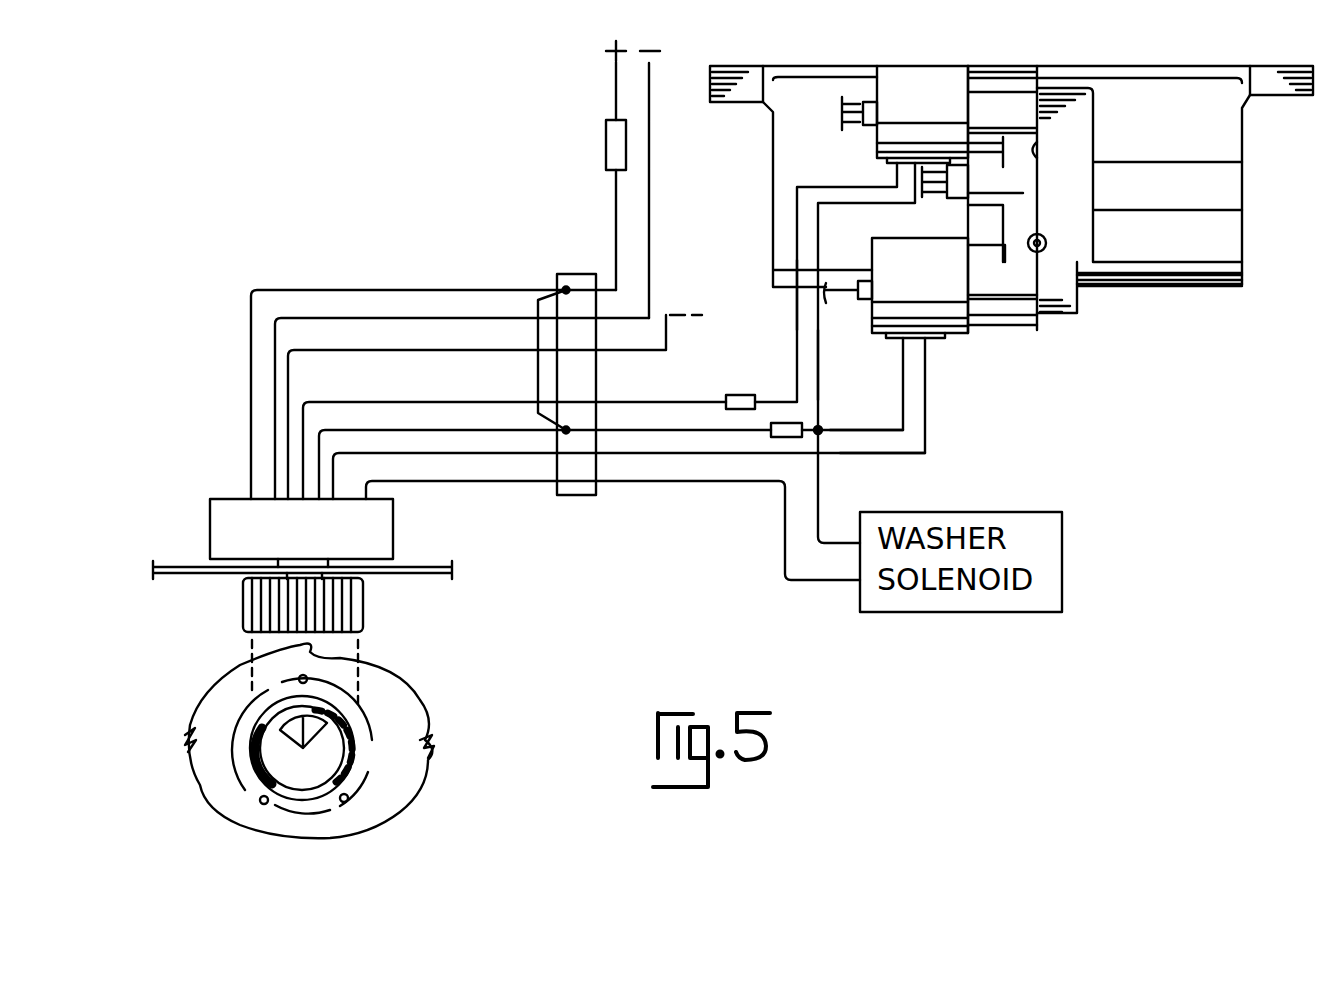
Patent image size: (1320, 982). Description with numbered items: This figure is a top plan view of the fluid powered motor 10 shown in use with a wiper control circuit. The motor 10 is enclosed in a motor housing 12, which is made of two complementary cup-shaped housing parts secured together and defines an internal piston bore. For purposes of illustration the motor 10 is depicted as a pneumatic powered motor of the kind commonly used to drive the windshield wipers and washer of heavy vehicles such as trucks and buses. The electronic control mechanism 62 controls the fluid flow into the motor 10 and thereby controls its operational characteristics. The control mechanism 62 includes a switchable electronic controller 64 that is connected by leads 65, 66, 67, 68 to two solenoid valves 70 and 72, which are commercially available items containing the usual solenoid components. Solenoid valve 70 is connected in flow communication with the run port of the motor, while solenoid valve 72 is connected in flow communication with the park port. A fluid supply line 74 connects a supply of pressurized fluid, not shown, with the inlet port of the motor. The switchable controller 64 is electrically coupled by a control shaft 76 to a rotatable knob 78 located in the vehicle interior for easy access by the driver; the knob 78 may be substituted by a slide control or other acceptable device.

The fluid powered motor 10 is at (1133, 298).
The motor housing 12 is at (1195, 270).
The electronic control mechanism 62 is at (549, 549).
The switchable electronic controller 64 is at (393, 521).
The lead 65 is at (797, 324).
The lead 66 is at (818, 372).
The lead 67 is at (883, 430).
The lead 68 is at (925, 452).
The solenoid valve 70 is at (903, 82).
The solenoid valve 72 is at (945, 312).
The fluid supply line 74 is at (931, 187).
The control shaft 76 is at (236, 573).
The rotatable knob 78 is at (363, 606).